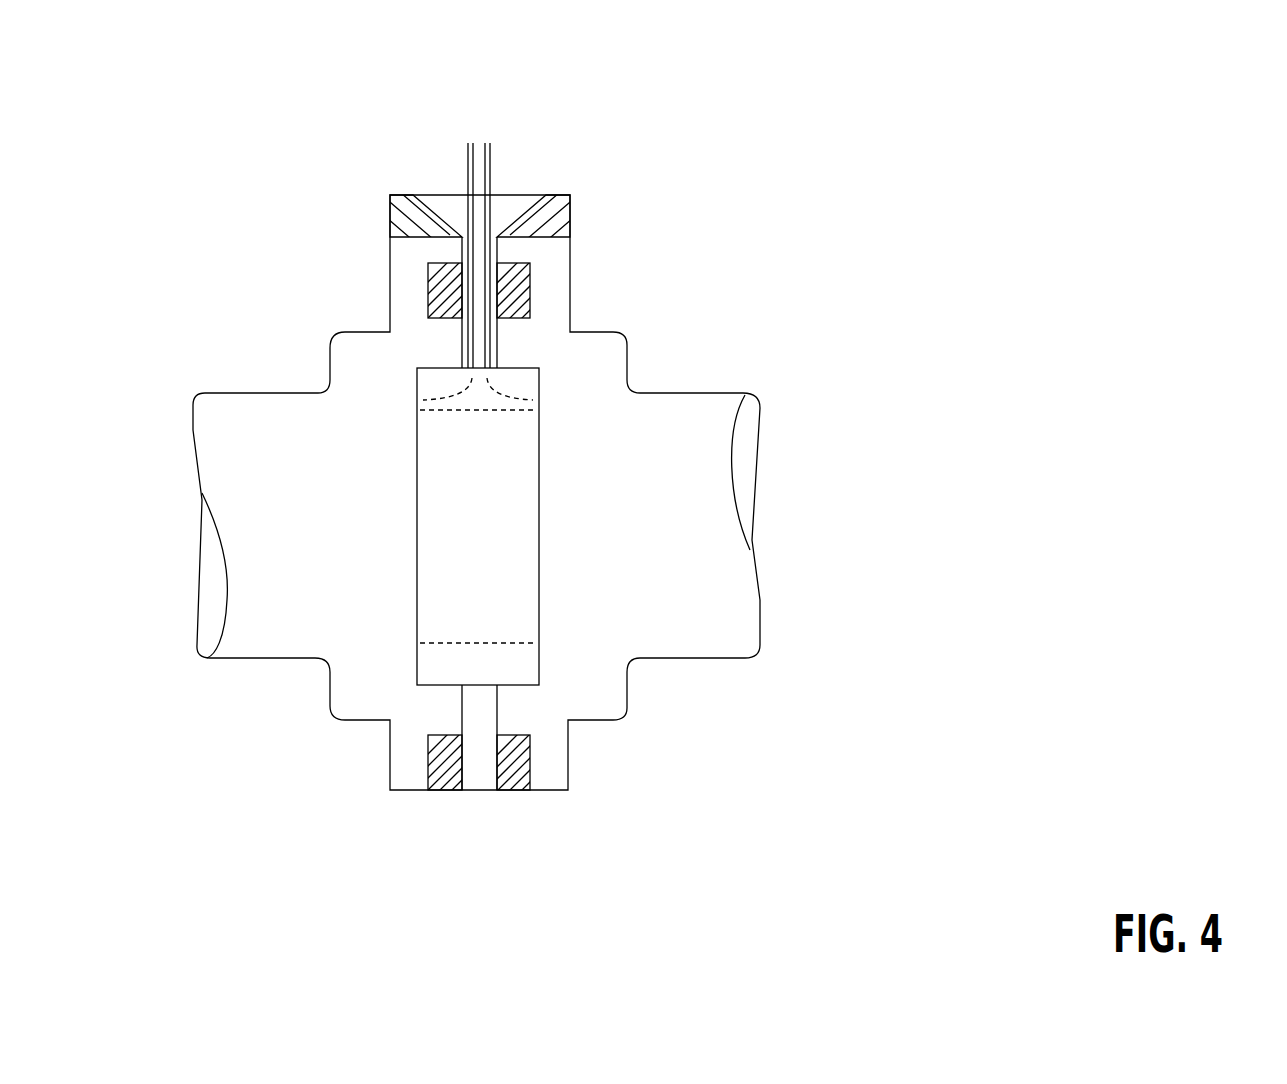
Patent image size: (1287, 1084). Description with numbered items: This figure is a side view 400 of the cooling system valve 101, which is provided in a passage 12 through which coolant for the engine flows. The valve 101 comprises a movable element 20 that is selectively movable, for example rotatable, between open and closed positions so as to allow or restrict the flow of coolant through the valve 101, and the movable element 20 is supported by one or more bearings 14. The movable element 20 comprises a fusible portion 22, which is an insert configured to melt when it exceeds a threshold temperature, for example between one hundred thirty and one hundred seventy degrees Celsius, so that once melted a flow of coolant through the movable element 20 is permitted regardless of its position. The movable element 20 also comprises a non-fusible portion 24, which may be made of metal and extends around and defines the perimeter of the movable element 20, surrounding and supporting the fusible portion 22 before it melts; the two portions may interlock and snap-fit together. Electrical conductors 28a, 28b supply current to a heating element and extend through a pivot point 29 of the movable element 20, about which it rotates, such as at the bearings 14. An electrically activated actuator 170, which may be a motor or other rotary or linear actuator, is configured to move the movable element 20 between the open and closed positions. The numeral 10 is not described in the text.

The sensor assembly 10 is at (590, 392).
The passage 12 is at (697, 583).
The bearings 14 is at (530, 280).
The movable element 20 is at (455, 542).
The fusible portion 22 is at (503, 495).
The non-fusible portion 24 is at (540, 659).
The electrical conductor 28a is at (493, 163).
The electrical conductor 28b is at (467, 163).
The pivot point 29 is at (467, 283).
The electrically activated actuator 170 is at (570, 210).
The side view 400 is at (1088, 80).
The valve 101 is at (1033, 287).